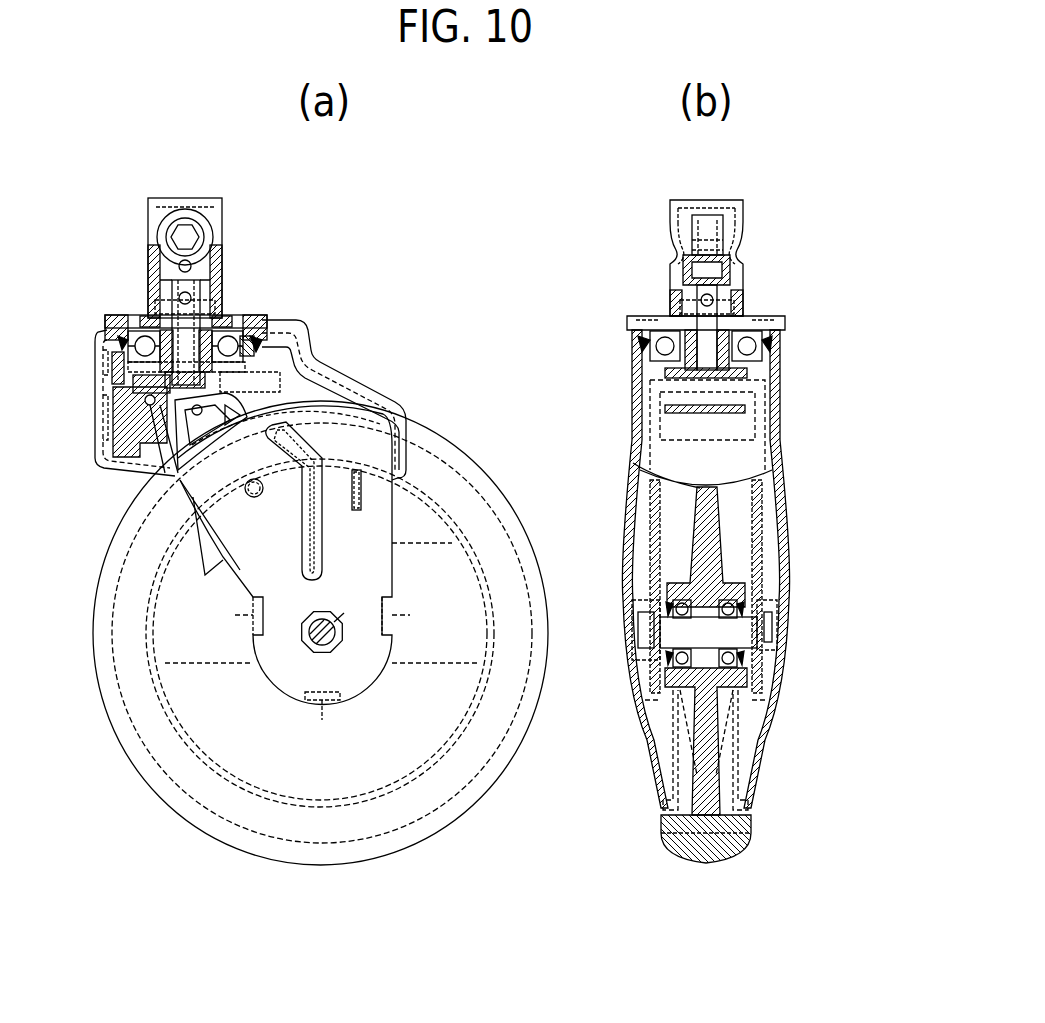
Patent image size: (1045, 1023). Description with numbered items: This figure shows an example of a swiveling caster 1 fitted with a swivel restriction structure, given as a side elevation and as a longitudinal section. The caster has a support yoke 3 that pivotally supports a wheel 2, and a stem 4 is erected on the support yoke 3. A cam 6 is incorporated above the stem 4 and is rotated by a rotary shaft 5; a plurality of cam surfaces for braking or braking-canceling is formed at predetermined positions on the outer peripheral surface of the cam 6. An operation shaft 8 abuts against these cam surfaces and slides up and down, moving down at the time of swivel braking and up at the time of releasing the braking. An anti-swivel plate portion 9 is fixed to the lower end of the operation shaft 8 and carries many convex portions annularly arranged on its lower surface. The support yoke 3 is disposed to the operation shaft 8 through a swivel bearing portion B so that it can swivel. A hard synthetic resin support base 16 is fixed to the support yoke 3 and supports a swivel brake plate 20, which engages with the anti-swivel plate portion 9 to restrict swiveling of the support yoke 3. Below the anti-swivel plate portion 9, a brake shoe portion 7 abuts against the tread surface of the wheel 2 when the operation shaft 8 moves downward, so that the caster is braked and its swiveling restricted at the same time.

The swiveling caster 1 is at (440, 318).
The wheel 2 is at (458, 451).
The support yoke 3 is at (345, 380).
The stem 4 is at (224, 262).
The rotary shaft 5 is at (192, 233).
The cam 6 is at (182, 340).
The brake shoe portion 7 is at (262, 395).
The operation shaft 8 is at (152, 300).
The anti-swivel plate portion 9 is at (245, 343).
The swivel bearing portion B is at (124, 343).
The support base 16 is at (113, 420).
The swivel brake plate 20 is at (122, 372).